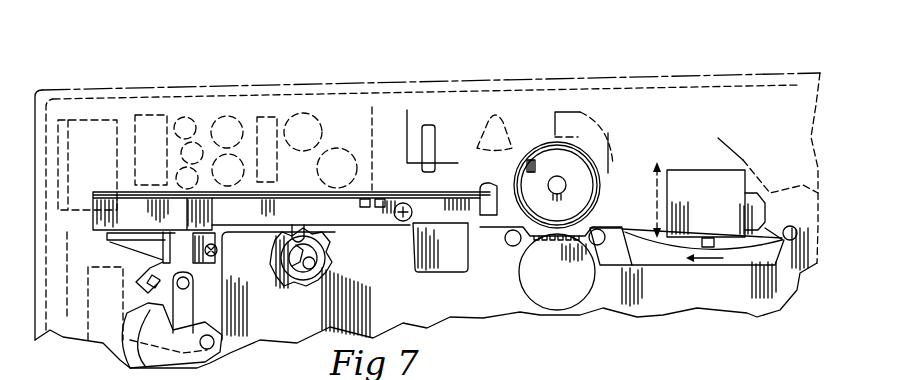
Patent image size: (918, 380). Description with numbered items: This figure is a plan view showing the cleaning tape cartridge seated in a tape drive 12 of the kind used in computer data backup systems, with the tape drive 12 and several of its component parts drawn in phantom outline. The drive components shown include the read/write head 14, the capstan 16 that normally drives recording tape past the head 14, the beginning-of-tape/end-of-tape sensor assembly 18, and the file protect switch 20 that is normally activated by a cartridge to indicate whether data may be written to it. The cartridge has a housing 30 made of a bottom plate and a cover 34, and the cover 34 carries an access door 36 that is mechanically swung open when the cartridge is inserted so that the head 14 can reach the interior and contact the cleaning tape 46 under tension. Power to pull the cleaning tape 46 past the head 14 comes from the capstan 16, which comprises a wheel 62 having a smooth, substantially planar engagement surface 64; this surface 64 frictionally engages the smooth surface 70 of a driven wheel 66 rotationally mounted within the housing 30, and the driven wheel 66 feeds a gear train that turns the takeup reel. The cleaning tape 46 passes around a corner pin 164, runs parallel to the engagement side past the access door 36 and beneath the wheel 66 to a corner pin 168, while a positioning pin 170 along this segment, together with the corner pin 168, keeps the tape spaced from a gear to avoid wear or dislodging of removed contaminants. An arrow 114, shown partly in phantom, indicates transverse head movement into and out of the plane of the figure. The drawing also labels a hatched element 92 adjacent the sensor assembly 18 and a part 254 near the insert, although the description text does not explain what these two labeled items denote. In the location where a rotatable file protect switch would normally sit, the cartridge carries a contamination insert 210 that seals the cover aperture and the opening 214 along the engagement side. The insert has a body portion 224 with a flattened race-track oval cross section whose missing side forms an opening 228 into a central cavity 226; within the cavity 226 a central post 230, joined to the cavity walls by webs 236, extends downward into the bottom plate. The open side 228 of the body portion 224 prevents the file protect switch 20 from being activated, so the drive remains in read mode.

The tape drive 12 is at (343, 80).
The read/write head 14 is at (671, 158).
The capstan 16 is at (539, 138).
The BOT/EOT sensor assembly 18 is at (471, 278).
The file protect switch 20 is at (311, 228).
The housing 30 is at (632, 322).
The cover 34 is at (730, 298).
The access door 36 is at (718, 143).
The cleaning tape 46 is at (632, 236).
The wheel 62 is at (527, 167).
The engagement surface 64 is at (600, 178).
The driven wheel 66 is at (543, 311).
The smooth surface 70 is at (590, 226).
The hatched block 92 is at (443, 273).
The arrow 114 is at (657, 200).
The corner pin 164 is at (793, 224).
The corner pin 168 is at (509, 234).
The positioning pin 170 is at (626, 254).
The contamination insert 210 is at (328, 278).
The opening 214 is at (291, 230).
The body portion 224 is at (330, 240).
The central cavity 226 is at (308, 253).
The opening 228 is at (221, 300).
The central post 230 is at (262, 224).
The web 236 is at (291, 270).
The gear axle 254 is at (333, 266).